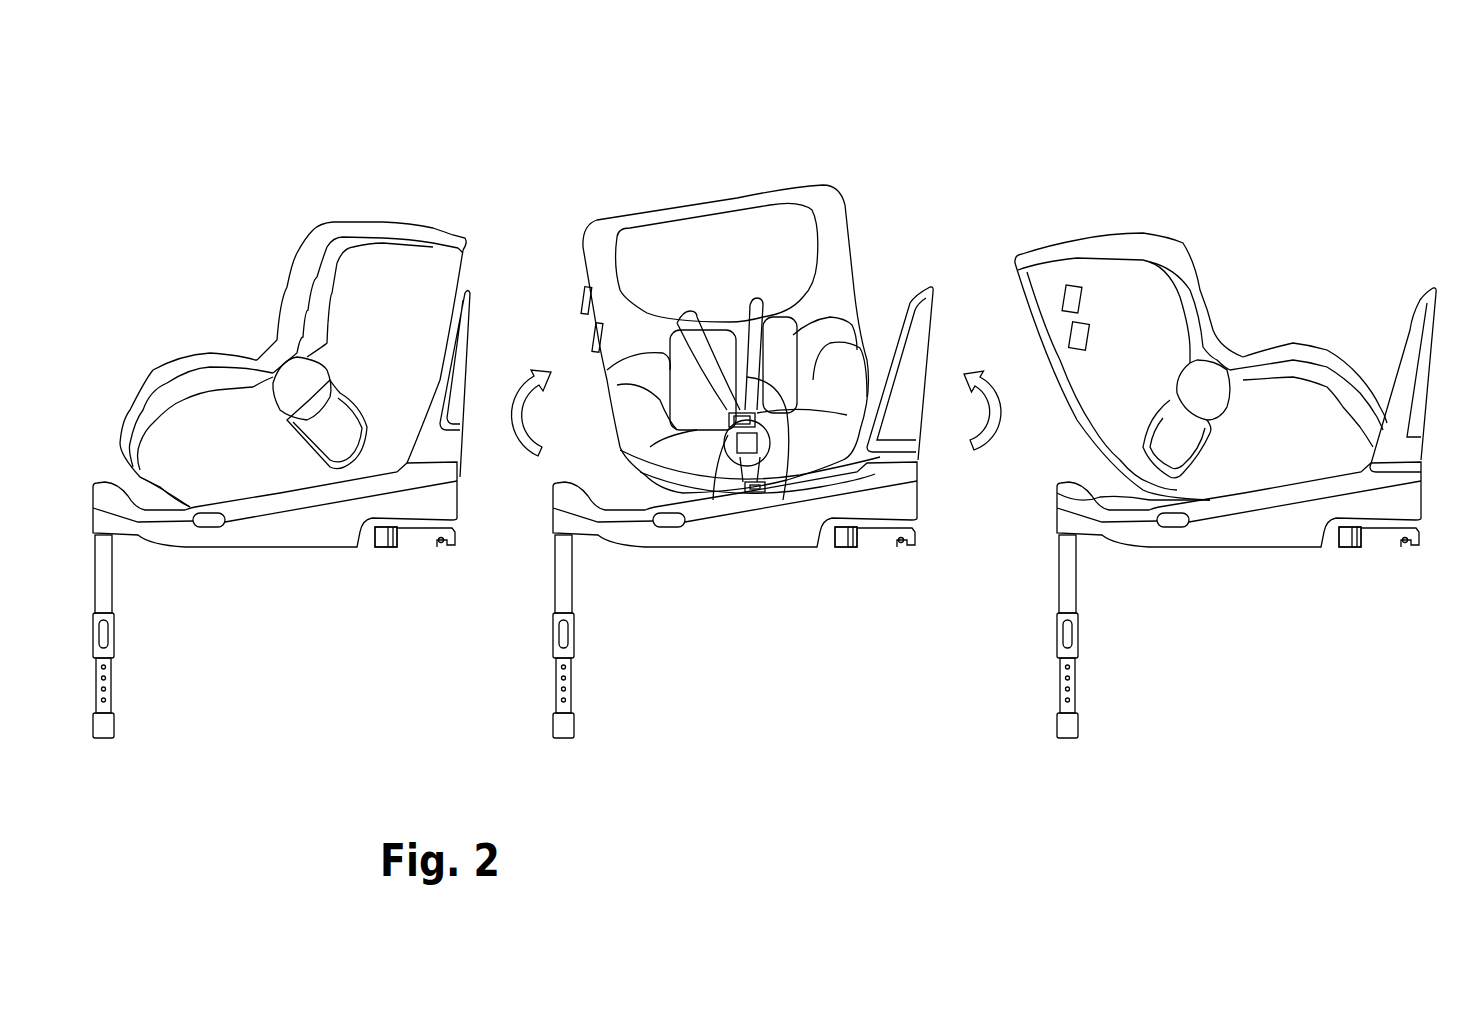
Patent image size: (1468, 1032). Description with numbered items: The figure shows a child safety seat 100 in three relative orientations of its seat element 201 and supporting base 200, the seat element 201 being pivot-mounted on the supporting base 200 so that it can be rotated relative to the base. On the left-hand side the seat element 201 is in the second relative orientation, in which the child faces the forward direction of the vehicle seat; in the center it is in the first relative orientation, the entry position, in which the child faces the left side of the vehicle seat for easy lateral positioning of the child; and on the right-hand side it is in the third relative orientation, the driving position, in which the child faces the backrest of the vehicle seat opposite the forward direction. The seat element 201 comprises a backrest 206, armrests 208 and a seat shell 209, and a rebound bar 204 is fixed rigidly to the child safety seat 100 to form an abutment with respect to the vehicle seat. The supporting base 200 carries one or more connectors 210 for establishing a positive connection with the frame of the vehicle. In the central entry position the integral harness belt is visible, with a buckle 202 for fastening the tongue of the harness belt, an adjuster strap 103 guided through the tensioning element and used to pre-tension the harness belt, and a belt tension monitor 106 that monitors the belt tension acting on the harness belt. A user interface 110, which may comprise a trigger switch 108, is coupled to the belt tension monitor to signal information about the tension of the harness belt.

The child safety seat 100 is at (198, 150).
The adjuster strap 103 is at (753, 473).
The belt tension monitor 106 is at (793, 450).
The trigger switch 108 is at (590, 340).
The user interface 110 is at (583, 293).
The supporting base 200 is at (285, 563).
The seat element 201 is at (292, 237).
The buckle 202 is at (727, 453).
The rebound bar 204 is at (466, 351).
The backrest 206 is at (432, 237).
The armrests 208 is at (190, 357).
The seat shell 209 is at (455, 267).
The connectors 210 is at (423, 537).